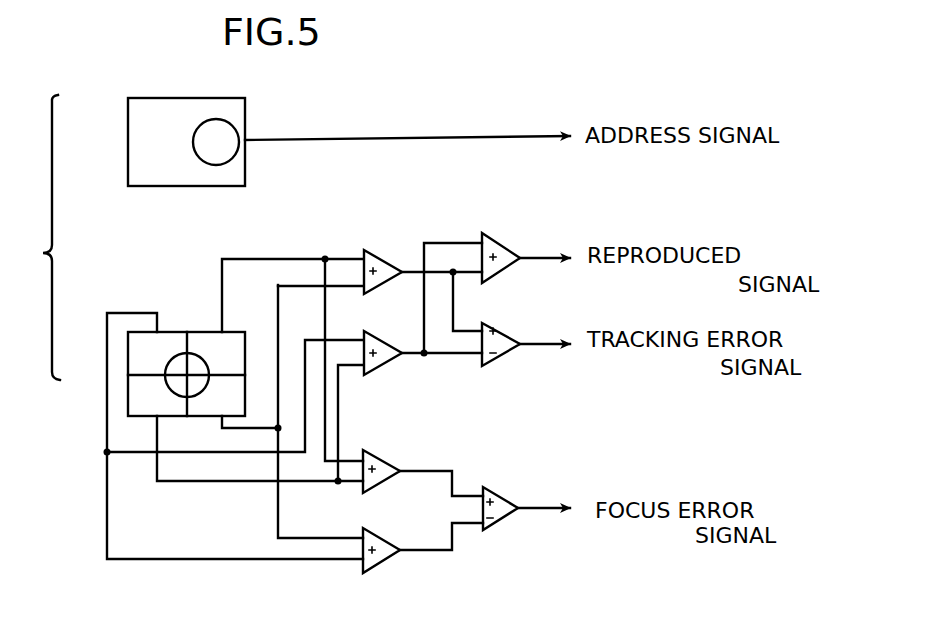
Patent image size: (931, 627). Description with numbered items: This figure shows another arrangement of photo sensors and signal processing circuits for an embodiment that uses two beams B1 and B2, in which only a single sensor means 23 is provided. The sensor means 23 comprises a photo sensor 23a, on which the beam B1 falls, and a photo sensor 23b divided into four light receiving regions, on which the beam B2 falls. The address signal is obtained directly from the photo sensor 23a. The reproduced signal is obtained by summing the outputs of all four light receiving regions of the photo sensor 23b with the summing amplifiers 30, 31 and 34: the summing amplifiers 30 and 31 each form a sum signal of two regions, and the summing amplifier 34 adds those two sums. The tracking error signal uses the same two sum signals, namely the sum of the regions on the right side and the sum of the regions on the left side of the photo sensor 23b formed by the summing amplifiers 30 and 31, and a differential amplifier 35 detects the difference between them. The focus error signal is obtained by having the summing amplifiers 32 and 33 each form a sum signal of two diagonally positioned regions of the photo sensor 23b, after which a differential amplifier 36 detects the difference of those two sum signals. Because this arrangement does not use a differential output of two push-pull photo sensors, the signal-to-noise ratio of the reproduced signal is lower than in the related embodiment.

The sensor means 23 is at (37, 237).
The photo sensor 23a is at (138, 115).
The photo sensor 23b is at (137, 360).
The beam B1 is at (222, 135).
The beam B2 is at (205, 357).
The summing amplifier 30 is at (385, 253).
The summing amplifier 31 is at (404, 320).
The summing amplifier 32 is at (368, 453).
The summing amplifier 33 is at (368, 537).
The summing amplifier 34 is at (510, 244).
The differential amplifier 35 is at (503, 355).
The differential amplifier 36 is at (510, 516).